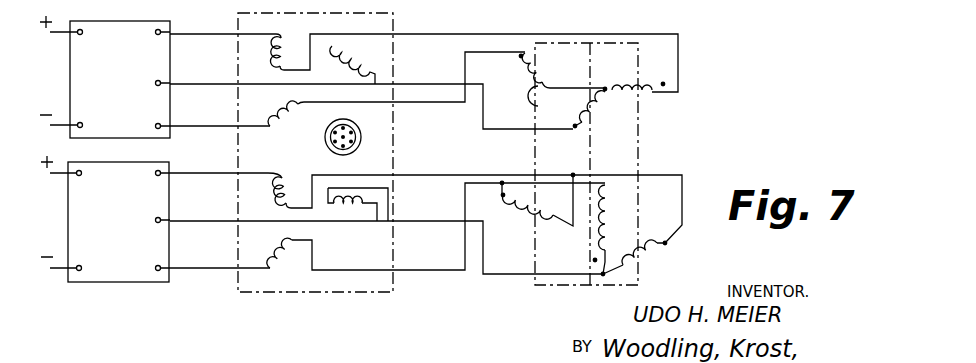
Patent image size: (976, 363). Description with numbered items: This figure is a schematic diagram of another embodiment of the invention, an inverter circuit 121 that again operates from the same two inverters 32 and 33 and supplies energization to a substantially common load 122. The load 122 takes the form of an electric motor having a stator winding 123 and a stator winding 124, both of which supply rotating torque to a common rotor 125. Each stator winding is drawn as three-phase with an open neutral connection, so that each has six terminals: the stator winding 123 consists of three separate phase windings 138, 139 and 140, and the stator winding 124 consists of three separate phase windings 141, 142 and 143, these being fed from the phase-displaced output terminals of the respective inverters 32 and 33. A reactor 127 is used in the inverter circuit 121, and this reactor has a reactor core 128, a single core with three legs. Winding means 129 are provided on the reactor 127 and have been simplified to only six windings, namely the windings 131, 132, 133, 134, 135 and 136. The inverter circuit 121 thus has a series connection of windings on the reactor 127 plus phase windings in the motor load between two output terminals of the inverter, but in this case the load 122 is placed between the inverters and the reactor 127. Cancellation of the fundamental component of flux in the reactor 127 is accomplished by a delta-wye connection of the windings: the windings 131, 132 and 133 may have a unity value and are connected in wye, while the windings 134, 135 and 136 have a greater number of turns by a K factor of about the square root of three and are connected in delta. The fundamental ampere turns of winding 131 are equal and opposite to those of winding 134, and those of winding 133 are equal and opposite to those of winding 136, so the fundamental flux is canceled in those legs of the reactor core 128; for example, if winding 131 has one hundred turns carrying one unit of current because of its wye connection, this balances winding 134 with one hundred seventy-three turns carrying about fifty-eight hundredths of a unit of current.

The inverter 32 is at (70, 70).
The inverter 33 is at (68, 218).
The inverter circuit 121 is at (748, 81).
The common load 122 is at (398, 24).
The stator winding 123 is at (263, 63).
The stator winding 124 is at (272, 247).
The common rotor 125 is at (361, 134).
The reactor 127 is at (545, 291).
The reactor core 128 is at (565, 288).
The winding means 129 is at (590, 112).
The reactor winding 131 is at (652, 96).
The reactor winding 132 is at (538, 68).
The reactor winding 133 is at (600, 108).
The reactor winding 134 is at (666, 246).
The reactor winding 135 is at (527, 206).
The reactor winding 136 is at (607, 223).
The phase winding 138 is at (283, 36).
The phase winding 139 is at (281, 109).
The phase winding 140 is at (366, 55).
The phase winding 141 is at (285, 177).
The phase winding 142 is at (268, 270).
The phase winding 143 is at (344, 207).